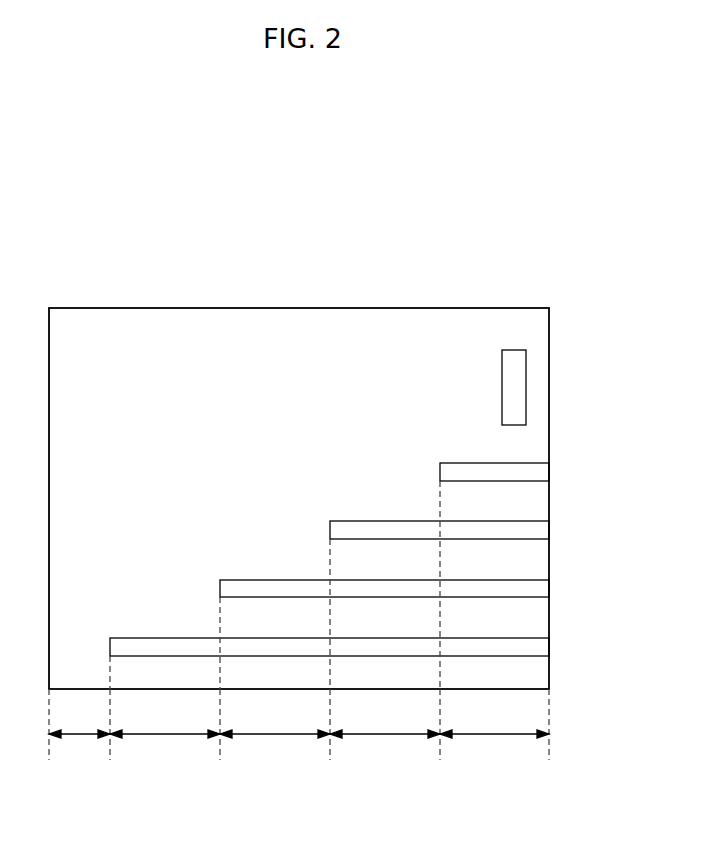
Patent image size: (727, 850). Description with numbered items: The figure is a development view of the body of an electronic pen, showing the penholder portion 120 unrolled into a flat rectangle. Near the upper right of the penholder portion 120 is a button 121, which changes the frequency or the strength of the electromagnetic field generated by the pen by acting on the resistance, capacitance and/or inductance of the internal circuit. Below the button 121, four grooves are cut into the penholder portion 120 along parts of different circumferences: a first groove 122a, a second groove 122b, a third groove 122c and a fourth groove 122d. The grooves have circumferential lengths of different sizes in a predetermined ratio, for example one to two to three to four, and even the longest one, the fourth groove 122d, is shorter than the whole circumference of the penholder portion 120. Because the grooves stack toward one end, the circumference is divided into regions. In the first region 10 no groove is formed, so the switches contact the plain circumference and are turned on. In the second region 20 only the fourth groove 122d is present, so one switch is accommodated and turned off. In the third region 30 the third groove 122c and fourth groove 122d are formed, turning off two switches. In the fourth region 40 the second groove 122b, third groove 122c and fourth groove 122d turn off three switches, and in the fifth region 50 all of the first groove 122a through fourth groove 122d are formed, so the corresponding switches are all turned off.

The penholder portion 120 is at (326, 308).
The button 121 is at (526, 386).
The first groove 122a is at (549, 468).
The second groove 122b is at (549, 528).
The third groove 122c is at (549, 587).
The fourth groove 122d is at (549, 646).
The first region 10 is at (79, 754).
The second region 20 is at (165, 754).
The third region 30 is at (275, 754).
The fourth region 40 is at (385, 754).
The fifth region 50 is at (494, 754).